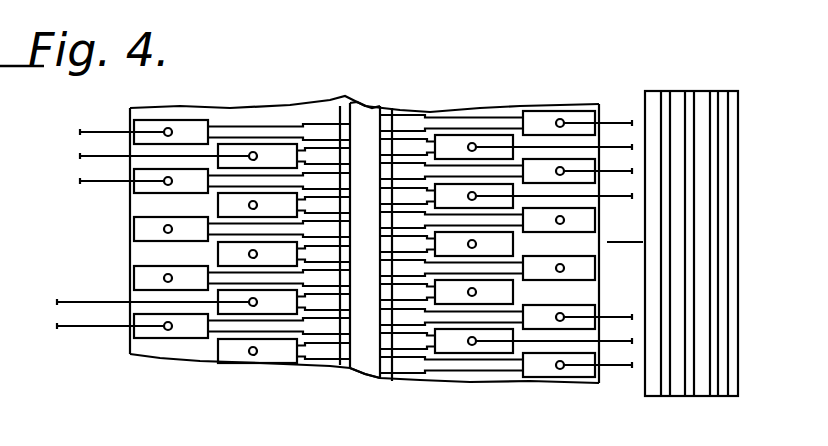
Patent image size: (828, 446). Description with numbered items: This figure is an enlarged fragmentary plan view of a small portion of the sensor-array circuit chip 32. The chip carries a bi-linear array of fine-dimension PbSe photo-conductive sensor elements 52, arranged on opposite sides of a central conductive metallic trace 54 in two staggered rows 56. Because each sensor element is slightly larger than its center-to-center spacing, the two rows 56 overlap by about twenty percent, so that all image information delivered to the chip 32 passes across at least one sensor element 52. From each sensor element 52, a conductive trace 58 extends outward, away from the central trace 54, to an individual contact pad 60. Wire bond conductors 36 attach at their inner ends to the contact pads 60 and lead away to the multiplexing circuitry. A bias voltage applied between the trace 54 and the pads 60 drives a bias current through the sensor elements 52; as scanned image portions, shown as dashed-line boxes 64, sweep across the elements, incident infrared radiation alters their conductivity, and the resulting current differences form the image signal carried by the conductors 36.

The sensor-array circuit chip 32 is at (476, 72).
The wire bond conductors 36 is at (99, 192).
The sensor elements 52 is at (330, 126).
The central conductive metallic trace 54 is at (366, 110).
The staggered rows 56 is at (343, 378).
The conductive traces 58 is at (297, 151).
The contact pads 60 is at (197, 336).
The image lines 64 is at (728, 94).